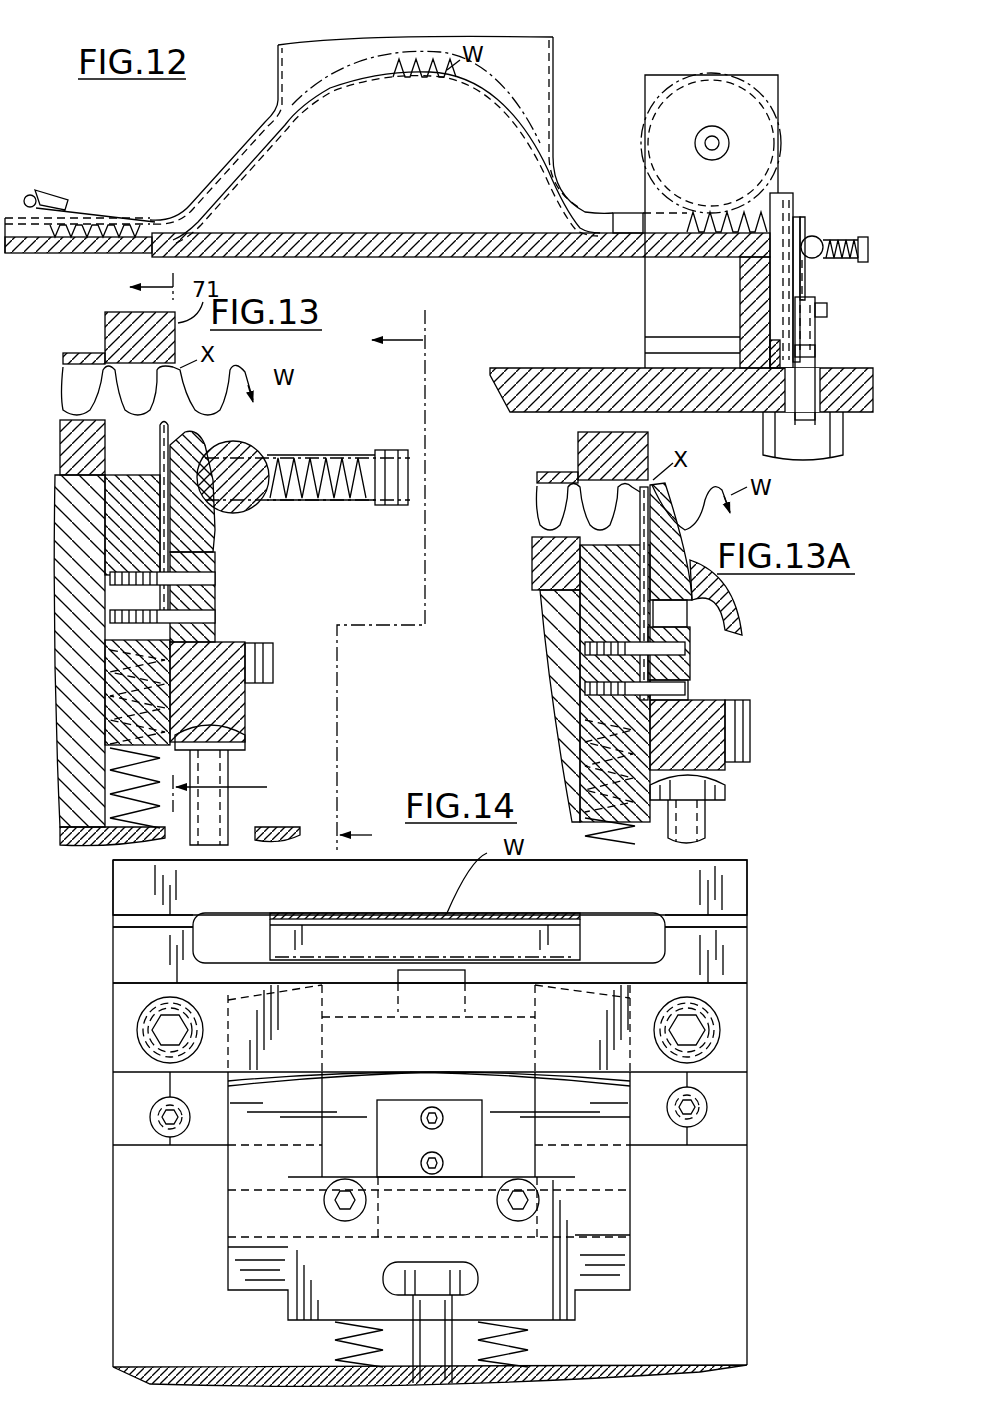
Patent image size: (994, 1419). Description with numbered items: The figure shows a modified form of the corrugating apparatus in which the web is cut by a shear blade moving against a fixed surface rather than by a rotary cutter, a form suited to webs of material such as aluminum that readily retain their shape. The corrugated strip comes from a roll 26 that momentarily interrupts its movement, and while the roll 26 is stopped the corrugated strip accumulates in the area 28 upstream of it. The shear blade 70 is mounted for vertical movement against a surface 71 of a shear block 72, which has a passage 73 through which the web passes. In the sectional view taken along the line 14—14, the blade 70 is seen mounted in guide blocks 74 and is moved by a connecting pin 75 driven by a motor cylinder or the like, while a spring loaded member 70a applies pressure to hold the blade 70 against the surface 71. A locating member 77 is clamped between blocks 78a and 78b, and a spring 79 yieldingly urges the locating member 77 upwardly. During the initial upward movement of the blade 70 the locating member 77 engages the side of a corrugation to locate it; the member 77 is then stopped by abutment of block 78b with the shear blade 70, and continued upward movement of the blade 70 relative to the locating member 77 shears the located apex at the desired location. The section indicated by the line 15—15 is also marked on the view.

In FIG. 12, the roll 26 is at (767, 131).
In FIG. 12, the area 28 is at (573, 117).
In FIG. 12, the shear blade 70 is at (807, 281).
In FIG. 13, the shear blade 70 is at (207, 537).
In FIG. 13A, the shear blade 70 is at (670, 553).
In FIG. 14, the shear blade 70 is at (528, 1107).
In FIG. 12, the spring loaded member 70a is at (814, 237).
In FIG. 13, the spring loaded member 70a is at (257, 437).
In FIG. 13A, the spring loaded member 70a is at (733, 605).
In FIG. 12, the surface 71 is at (797, 217).
In FIG. 14, the surface 71 is at (722, 890).
In FIG. 12, the shear block 72 is at (783, 193).
In FIG. 13, the shear block 72 is at (113, 332).
In FIG. 14, the shear block 72 is at (733, 940).
In FIG. 13, the passage 73 is at (114, 375).
In FIG. 14, the passage 73 is at (667, 937).
In FIG. 14, the guide blocks 74 is at (157, 1142).
In FIG. 13, the connecting pin 75 is at (222, 808).
In FIG. 13A, the connecting pin 75 is at (695, 818).
In FIG. 14, the connecting pin 75 is at (440, 1320).
In FIG. 12, the locating member 77 is at (740, 273).
In FIG. 13, the locating member 77 is at (162, 452).
In FIG. 13A, the locating member 77 is at (637, 597).
In FIG. 13, the block 78a is at (110, 635).
In FIG. 13A, the block 78a is at (587, 670).
In FIG. 12, the block 78b is at (820, 321).
In FIG. 13, the block 78b is at (197, 598).
In FIG. 13A, the block 78b is at (687, 663).
In FIG. 14, the block 78b is at (396, 1114).
In FIG. 13, the spring 79 is at (127, 827).
In FIG. 13A, the spring 79 is at (587, 830).
In FIG. 14, the spring 79 is at (335, 1345).
In FIG. 13, the section line 14 is at (381, 585).
In FIG. 12, the section line 15 is at (131, 288).
In FIG. 13, the section line 15 is at (239, 791).